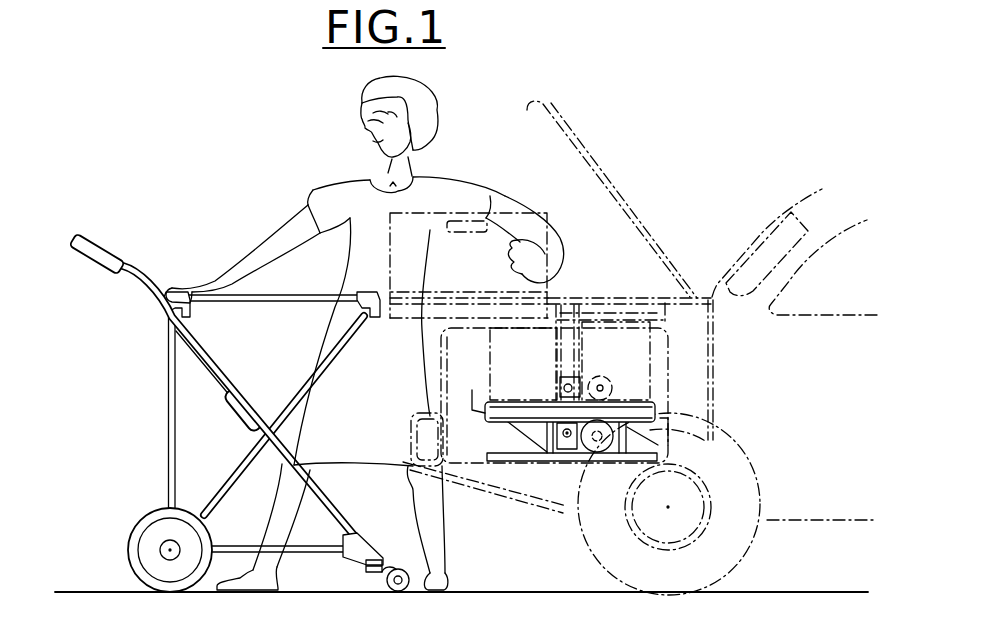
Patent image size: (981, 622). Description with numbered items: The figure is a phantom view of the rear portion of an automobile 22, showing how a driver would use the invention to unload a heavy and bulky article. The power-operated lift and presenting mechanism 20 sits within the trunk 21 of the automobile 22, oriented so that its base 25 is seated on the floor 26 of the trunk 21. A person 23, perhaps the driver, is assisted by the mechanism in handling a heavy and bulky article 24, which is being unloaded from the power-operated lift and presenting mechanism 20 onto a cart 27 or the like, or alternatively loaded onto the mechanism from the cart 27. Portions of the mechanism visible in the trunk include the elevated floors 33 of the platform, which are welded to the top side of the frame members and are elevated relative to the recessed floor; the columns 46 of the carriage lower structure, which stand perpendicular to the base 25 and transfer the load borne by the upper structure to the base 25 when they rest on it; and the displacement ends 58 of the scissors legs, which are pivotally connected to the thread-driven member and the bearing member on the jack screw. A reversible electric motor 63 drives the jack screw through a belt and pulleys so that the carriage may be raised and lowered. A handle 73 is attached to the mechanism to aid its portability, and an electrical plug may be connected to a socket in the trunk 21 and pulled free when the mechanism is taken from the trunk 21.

The power-operated lift and presenting mechanism 20 is at (599, 290).
The trunk 21 is at (722, 402).
The automobile 22 is at (853, 522).
The person 23 is at (324, 194).
The heavy and bulky article 24 is at (440, 205).
The base 25 is at (504, 455).
The floor 26 is at (517, 461).
The cart 27 is at (170, 432).
The elevated floors 33 is at (647, 398).
The columns 46 is at (667, 438).
The displacement end 58 is at (562, 424).
The reversible electric motor 63 is at (602, 379).
The handle 73 is at (473, 389).